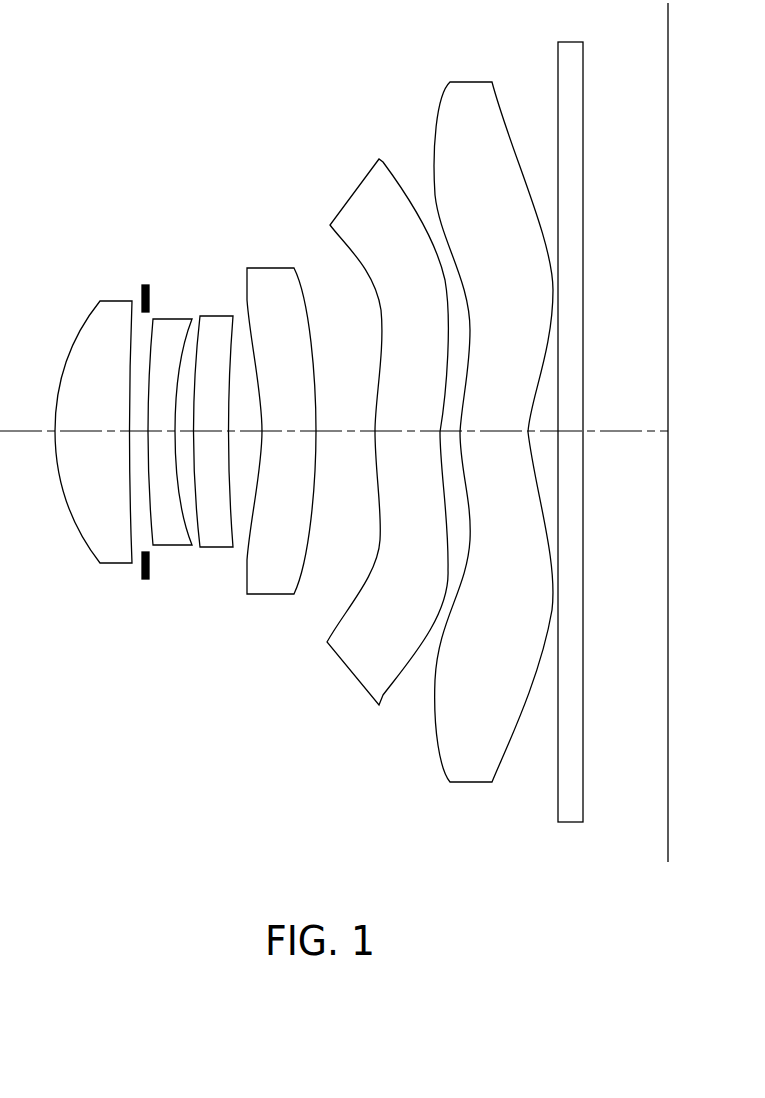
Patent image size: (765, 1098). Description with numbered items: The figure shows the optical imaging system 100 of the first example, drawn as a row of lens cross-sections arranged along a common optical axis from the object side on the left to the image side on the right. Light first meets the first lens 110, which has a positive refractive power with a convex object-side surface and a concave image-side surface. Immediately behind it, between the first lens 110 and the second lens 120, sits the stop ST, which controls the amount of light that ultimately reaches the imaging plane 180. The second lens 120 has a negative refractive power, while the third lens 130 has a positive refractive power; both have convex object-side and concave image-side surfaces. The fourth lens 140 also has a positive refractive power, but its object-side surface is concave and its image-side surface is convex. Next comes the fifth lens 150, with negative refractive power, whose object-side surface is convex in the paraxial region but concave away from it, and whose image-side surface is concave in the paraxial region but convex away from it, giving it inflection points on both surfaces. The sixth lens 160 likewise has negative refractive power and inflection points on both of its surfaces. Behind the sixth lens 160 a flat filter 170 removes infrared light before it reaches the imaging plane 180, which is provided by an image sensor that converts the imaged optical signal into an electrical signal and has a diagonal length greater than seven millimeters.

The optical imaging system 100 is at (203, 133).
The first lens 110 is at (114, 567).
The second lens 120 is at (170, 548).
The third lens 130 is at (216, 550).
The fourth lens 140 is at (269, 597).
The fifth lens 150 is at (358, 682).
The sixth lens 160 is at (470, 783).
The filter 170 is at (572, 823).
The imaging plane 180 is at (667, 811).
The stop ST is at (147, 296).